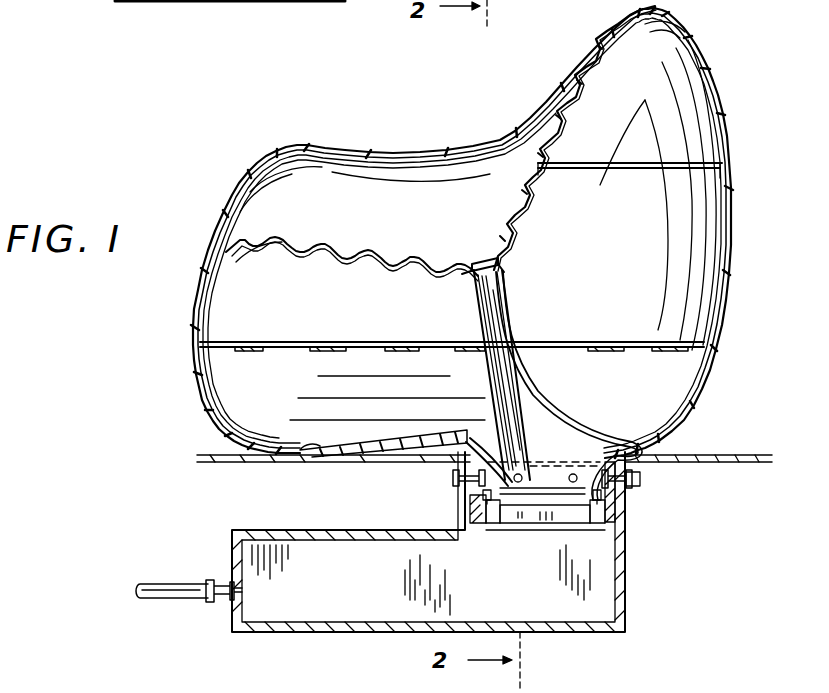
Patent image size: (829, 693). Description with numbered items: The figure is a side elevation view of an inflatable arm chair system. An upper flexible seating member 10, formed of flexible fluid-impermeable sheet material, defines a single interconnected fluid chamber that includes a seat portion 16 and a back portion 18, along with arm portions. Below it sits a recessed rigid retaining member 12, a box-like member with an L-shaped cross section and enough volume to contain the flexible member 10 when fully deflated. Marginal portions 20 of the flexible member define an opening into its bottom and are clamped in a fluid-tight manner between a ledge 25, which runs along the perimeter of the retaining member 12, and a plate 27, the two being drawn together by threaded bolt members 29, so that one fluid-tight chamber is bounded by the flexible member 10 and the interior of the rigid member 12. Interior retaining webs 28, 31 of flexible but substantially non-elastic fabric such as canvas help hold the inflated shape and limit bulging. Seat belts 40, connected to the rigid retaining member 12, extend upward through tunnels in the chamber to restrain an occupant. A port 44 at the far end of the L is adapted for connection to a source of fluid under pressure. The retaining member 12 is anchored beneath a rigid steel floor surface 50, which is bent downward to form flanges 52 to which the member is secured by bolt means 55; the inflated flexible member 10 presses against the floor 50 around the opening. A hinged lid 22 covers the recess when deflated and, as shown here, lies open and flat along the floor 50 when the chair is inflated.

The upper flexible seating member 10 is at (447, 140).
The recessed rigid retaining member 12 is at (632, 570).
The seat portion 16 is at (407, 266).
The back portion 18 is at (552, 128).
The marginal portions 20 is at (516, 524).
The hinged lid 22 is at (346, 462).
The ledge 25 is at (552, 506).
The plate 27 is at (584, 506).
The retaining web 28 is at (636, 165).
The threaded bolt members 29 is at (486, 530).
The retaining web 31 is at (320, 350).
The seat belts 40 is at (478, 262).
The port 44 is at (244, 590).
The rigid floor surface 50 is at (693, 454).
The flanges 52 is at (456, 507).
The bolt means 55 is at (634, 478).